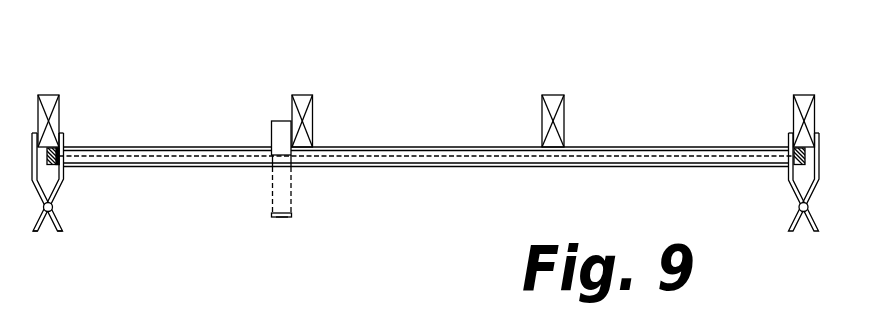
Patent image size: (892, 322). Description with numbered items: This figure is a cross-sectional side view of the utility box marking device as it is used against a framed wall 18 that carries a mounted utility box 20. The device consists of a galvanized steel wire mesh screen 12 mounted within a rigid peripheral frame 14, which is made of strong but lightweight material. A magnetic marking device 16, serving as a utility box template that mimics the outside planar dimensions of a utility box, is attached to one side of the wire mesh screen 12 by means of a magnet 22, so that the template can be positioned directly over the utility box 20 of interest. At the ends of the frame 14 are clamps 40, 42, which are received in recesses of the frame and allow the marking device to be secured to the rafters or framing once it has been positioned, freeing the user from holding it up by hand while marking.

The wire mesh screen 12 is at (639, 157).
The rigid peripheral frame 14 is at (61, 185).
The magnetic marking device 16 is at (280, 218).
The framed wall 18 is at (552, 95).
The utility box 20 is at (277, 121).
The magnet 22 is at (273, 213).
The clamp 40 is at (795, 214).
The clamp 42 is at (62, 219).